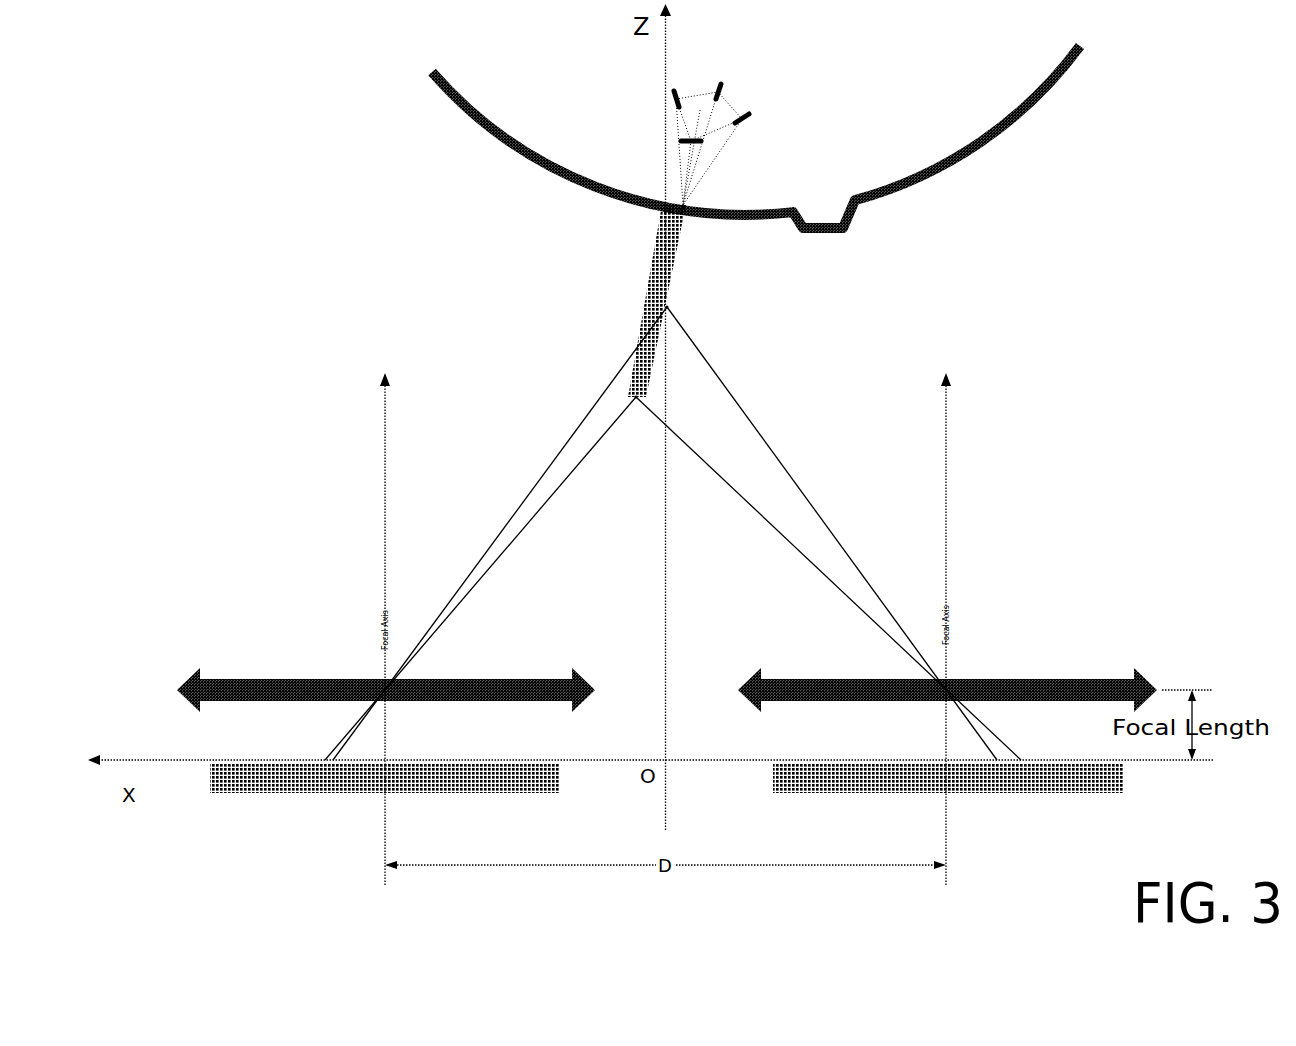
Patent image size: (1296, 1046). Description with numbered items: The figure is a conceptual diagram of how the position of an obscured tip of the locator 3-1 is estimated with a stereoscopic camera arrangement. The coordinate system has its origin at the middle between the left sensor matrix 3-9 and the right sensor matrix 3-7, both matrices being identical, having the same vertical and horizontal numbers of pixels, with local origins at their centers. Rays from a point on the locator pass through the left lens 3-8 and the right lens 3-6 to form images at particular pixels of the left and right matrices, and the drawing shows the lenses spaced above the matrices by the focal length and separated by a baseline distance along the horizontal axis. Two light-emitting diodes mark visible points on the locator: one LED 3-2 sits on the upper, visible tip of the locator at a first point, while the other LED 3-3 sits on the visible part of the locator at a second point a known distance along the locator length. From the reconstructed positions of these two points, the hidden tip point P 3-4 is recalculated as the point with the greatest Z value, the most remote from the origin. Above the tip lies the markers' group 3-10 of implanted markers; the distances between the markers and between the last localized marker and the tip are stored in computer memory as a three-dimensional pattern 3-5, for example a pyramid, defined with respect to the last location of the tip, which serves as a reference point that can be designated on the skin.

The locator 3-1 is at (747, 301).
The LED 3-2 is at (673, 573).
The LED 3-3 is at (665, 533).
The point P of the locator's tip 3-4 is at (618, 246).
The 3D pattern 3-5 is at (756, 137).
The right lens 3-6 is at (947, 679).
The right sensor matrix 3-7 is at (946, 783).
The left lens 3-8 is at (386, 678).
The left sensor matrix 3-9 is at (381, 783).
The marker group 3-10 is at (795, 144).